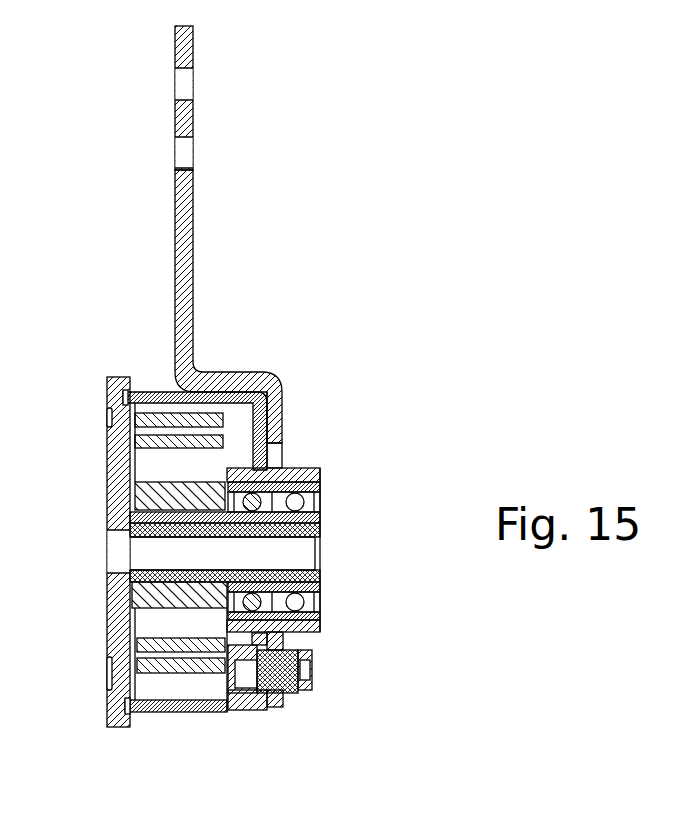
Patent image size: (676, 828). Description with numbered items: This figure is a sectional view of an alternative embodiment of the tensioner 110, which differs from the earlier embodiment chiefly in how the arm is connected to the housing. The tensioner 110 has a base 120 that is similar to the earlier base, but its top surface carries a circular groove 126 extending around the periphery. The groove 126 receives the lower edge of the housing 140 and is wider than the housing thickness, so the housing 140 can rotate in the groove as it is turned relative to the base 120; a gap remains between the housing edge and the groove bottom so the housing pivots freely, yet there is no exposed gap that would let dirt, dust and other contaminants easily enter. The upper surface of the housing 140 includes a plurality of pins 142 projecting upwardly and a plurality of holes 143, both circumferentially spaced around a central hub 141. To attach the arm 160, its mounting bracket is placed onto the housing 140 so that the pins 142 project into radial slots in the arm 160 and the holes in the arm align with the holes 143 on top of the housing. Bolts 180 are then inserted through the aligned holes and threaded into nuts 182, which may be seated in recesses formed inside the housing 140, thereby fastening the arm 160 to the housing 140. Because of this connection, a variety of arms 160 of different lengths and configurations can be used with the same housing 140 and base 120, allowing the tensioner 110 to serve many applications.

The tensioner 110 is at (203, 81).
The arm 160 is at (190, 240).
The housing 140 is at (150, 395).
The holes 143 is at (270, 420).
The pins 142 is at (276, 429).
The central hub 141 is at (310, 469).
The base 120 is at (112, 460).
The circular groove 126 is at (122, 712).
The nuts 182 is at (228, 712).
The bolts 180 is at (298, 693).